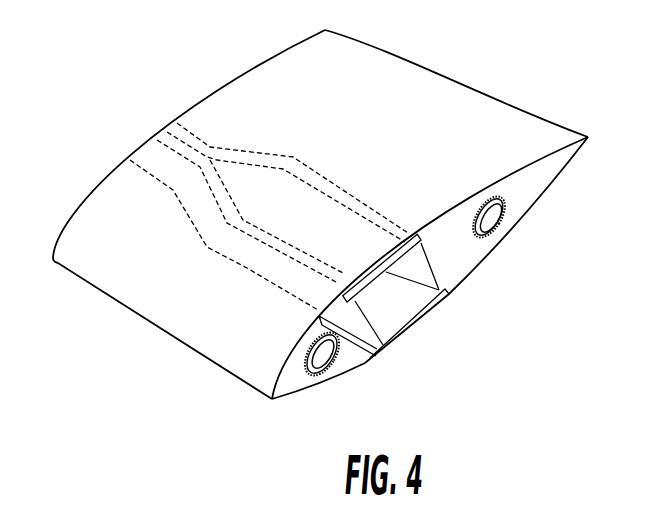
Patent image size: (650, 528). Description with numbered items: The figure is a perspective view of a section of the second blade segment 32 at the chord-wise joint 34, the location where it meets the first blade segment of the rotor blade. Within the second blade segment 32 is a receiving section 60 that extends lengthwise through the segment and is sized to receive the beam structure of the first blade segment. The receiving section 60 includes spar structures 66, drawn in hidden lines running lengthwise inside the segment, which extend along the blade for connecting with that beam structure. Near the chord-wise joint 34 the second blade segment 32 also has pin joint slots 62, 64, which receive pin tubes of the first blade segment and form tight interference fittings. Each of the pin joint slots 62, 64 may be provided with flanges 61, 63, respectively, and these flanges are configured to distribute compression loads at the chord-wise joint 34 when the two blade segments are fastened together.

The second blade segment 32 is at (414, 75).
The chord-wise joint 34 is at (284, 406).
The receiving section 60 is at (408, 308).
The flange 61 is at (311, 336).
The pin joint slot 62 is at (331, 361).
The flange 63 is at (487, 196).
The pin joint slot 64 is at (492, 220).
The spar structures 66 is at (325, 175).